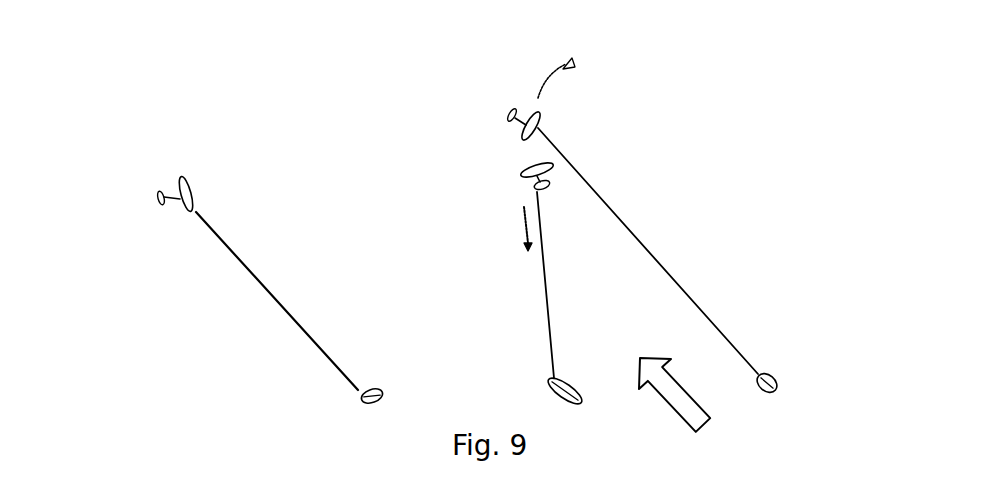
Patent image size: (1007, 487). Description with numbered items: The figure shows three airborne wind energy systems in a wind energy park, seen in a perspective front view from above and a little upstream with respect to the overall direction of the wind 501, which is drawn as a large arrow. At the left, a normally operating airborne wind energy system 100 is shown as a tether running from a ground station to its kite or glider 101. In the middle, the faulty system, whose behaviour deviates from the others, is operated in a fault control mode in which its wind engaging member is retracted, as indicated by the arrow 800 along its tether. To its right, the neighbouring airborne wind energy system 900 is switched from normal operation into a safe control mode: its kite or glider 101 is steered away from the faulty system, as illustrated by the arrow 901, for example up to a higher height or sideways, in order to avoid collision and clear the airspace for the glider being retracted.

The airborne wind energy system 100 is at (315, 371).
The kite or glider 101 is at (178, 218).
The neighbouring airborne wind energy system 900 is at (767, 362).
The arrow indicating retraction 800 is at (527, 233).
The arrow indicating steering away 901 is at (529, 76).
The overall direction of the wind 501 is at (669, 399).